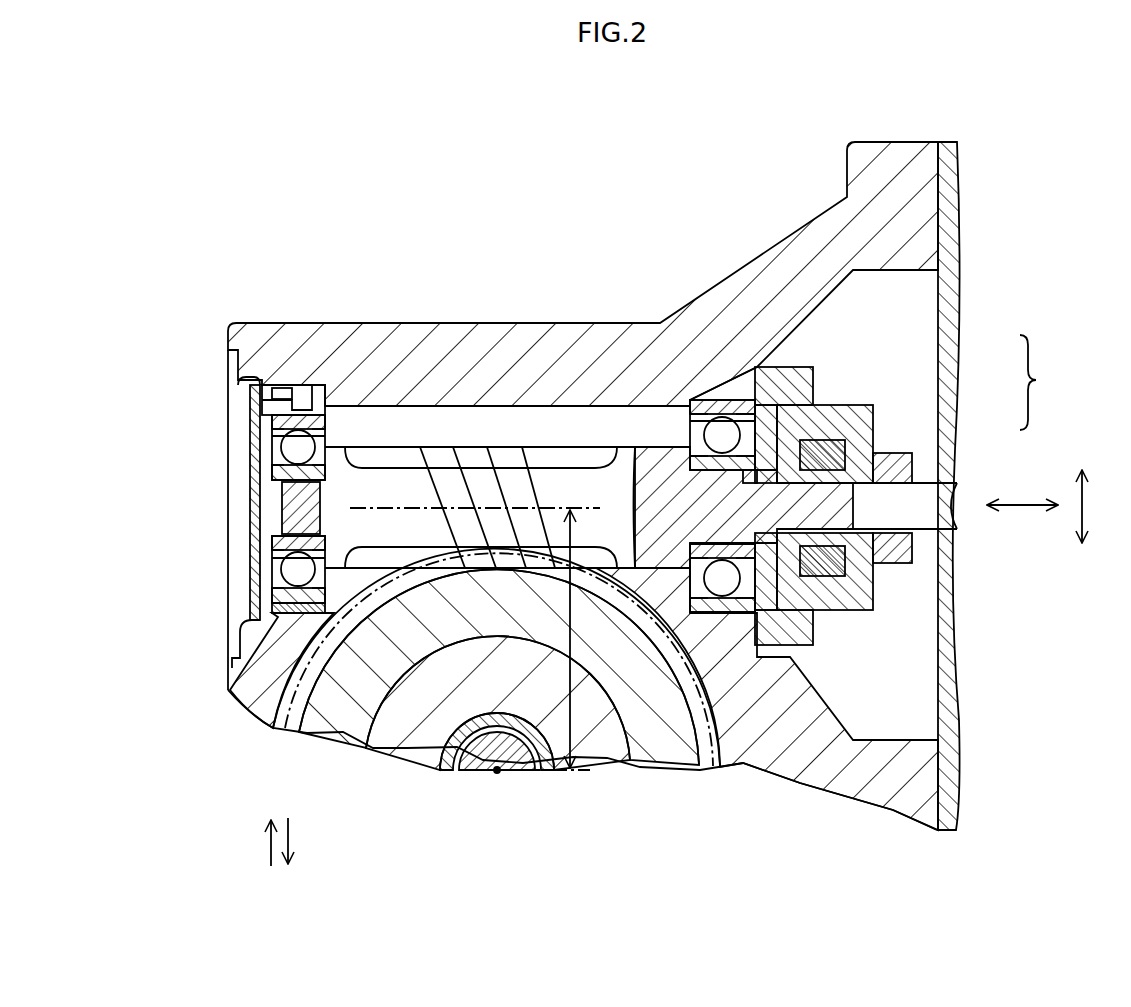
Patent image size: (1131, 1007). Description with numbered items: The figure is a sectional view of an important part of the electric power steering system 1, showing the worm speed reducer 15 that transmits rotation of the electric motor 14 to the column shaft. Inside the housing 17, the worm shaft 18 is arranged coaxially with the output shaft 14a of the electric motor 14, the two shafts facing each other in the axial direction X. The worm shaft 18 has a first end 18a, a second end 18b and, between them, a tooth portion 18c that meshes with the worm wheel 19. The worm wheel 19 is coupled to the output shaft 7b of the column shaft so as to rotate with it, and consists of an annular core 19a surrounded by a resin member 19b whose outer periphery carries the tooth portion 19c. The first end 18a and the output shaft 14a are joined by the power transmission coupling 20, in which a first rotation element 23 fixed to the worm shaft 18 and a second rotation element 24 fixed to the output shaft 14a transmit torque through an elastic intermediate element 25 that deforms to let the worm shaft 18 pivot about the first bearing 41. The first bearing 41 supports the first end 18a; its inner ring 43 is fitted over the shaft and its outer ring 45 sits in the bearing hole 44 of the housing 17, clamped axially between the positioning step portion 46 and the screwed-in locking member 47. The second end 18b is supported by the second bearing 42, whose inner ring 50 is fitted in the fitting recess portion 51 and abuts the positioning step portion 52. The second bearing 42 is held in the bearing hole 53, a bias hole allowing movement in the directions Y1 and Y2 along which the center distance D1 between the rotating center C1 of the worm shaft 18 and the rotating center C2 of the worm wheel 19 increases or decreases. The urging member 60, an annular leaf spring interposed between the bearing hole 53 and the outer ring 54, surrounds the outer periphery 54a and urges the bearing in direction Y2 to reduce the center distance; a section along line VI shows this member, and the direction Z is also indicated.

The vehicle drive device 1 is at (746, 184).
The electric motor 14 is at (951, 139).
The output shaft 14a is at (928, 515).
The worm speed reducer 15 is at (467, 321).
The housing 17 is at (578, 322).
The worm shaft 18 is at (437, 445).
The first end 18a is at (797, 515).
The second end 18b is at (273, 513).
The tooth portion 18c is at (512, 447).
The worm wheel 19 is at (491, 692).
The core 19a is at (403, 755).
The resin member 19b is at (345, 735).
The tooth portion 19c is at (296, 740).
The output shaft 7b is at (455, 758).
The power transmission coupling 20 is at (1044, 382).
The first rotation element 23 is at (790, 402).
The second rotation element 24 is at (878, 432).
The intermediate element 25 is at (822, 438).
The first bearing 41 is at (723, 600).
The second bearing 42 is at (273, 448).
The inner ring 43 is at (662, 480).
The bearing hole 44 is at (710, 398).
The outer ring 45 is at (745, 378).
The positioning step portion 46 is at (695, 412).
The locking member 47 is at (784, 367).
The inner ring 50 is at (277, 473).
The fitting recess portion 51 is at (280, 543).
The positioning step portion 52 is at (320, 482).
The bearing hole 53 is at (283, 597).
The outer ring 54 is at (272, 418).
The outer periphery 54a is at (273, 400).
The urging member 60 is at (312, 386).
The rotating center C1 is at (566, 500).
The rotating center C2 is at (497, 775).
The center distance D1 is at (572, 735).
The axial direction X is at (1022, 497).
The vertical direction Z is at (1092, 505).
The direction Y1 is at (267, 843).
The direction Y2 is at (292, 843).
The line VI- VI is at (262, 297).